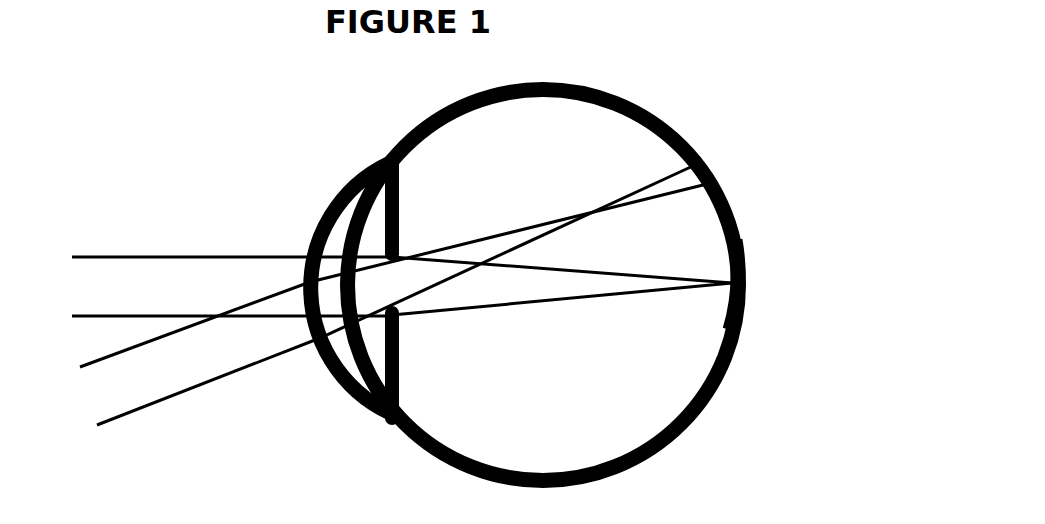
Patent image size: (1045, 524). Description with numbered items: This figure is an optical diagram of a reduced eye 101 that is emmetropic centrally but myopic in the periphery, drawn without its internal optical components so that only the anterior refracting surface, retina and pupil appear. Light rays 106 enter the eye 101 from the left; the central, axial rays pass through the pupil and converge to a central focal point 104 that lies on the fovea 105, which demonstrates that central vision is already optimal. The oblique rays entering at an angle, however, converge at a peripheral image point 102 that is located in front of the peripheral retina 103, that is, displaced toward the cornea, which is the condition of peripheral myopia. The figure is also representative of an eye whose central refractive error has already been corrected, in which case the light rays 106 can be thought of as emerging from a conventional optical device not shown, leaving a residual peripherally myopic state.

The eye 101 is at (341, 161).
The peripheral image point 102 is at (580, 200).
The peripheral retina 103 is at (752, 215).
The central focal point 104 is at (712, 300).
The fovea 105 is at (760, 295).
The light rays 106 is at (217, 286).